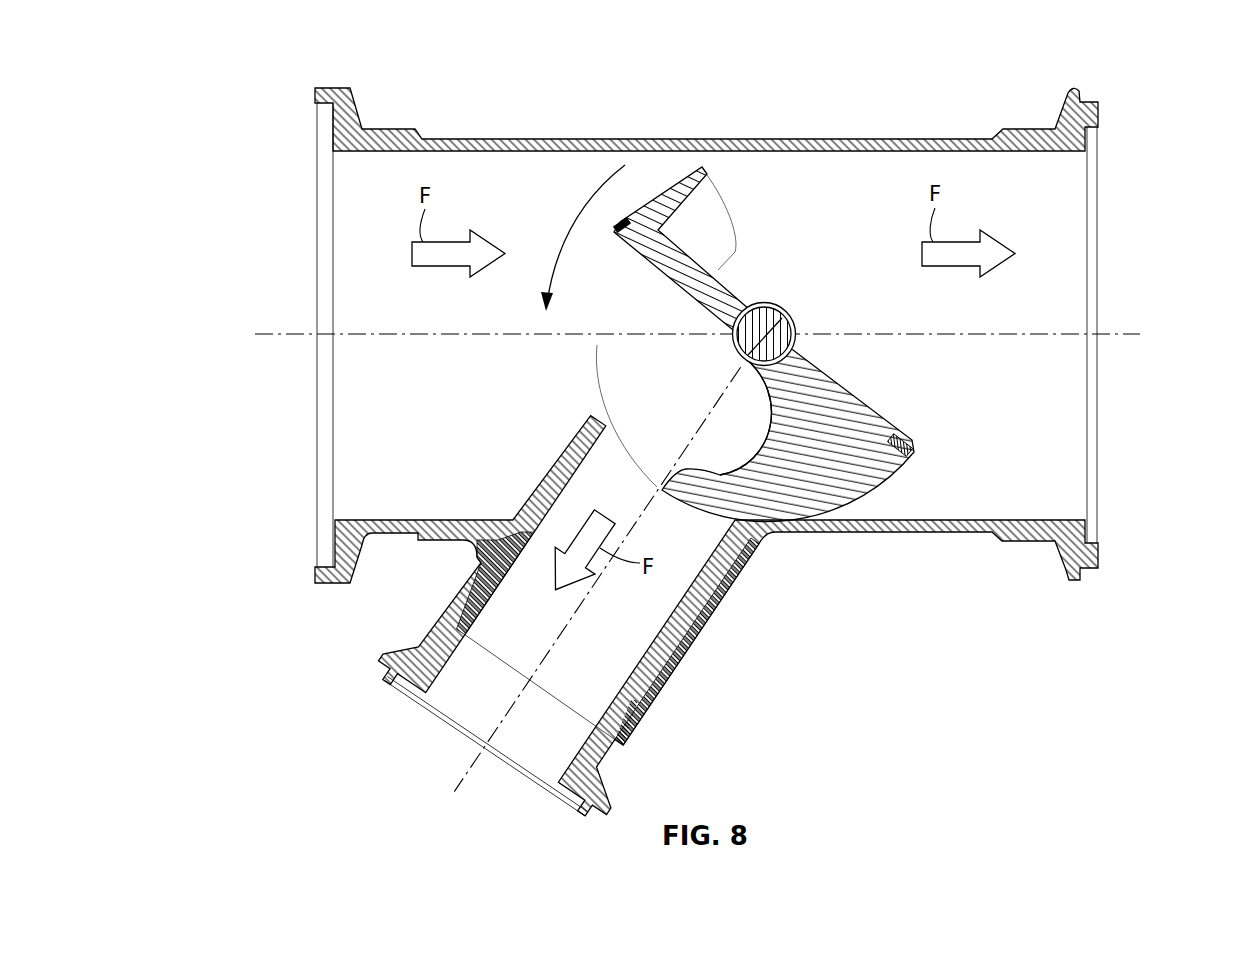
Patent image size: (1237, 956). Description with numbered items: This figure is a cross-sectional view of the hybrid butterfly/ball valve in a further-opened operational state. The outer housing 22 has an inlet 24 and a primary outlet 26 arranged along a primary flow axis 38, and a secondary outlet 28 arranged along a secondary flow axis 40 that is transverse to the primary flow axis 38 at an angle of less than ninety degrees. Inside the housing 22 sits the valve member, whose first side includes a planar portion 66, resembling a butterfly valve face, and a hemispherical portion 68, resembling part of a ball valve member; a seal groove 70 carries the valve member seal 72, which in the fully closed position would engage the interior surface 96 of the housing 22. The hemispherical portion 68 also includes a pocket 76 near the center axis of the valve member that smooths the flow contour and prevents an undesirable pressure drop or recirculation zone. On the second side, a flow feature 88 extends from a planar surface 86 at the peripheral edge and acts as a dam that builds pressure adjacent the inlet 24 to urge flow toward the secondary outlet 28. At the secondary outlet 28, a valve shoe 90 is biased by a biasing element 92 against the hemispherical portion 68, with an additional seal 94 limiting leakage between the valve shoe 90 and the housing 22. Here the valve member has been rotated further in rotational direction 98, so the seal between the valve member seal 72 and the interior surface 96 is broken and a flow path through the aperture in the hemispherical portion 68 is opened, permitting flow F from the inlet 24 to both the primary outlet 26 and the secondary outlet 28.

The outer housing 22 is at (497, 139).
The inlet 24 is at (294, 211).
The primary outlet 26 is at (1124, 219).
The secondary outlet 28 is at (438, 720).
The primary flow axis 38 is at (268, 338).
The secondary flow axis 40 is at (458, 788).
The planar portion 66 is at (660, 284).
The hemispherical portion 68 is at (884, 483).
The seal groove 70 is at (901, 440).
The valve member seal 72 is at (621, 223).
The pocket 76 is at (720, 474).
The planar surface 86 is at (731, 295).
The flow feature 88 is at (707, 218).
The valve shoe 90 is at (520, 507).
The biasing element 92 is at (680, 664).
The additional seal 94 is at (654, 687).
The interior surface 96 is at (566, 194).
The rotational direction 98 is at (563, 246).